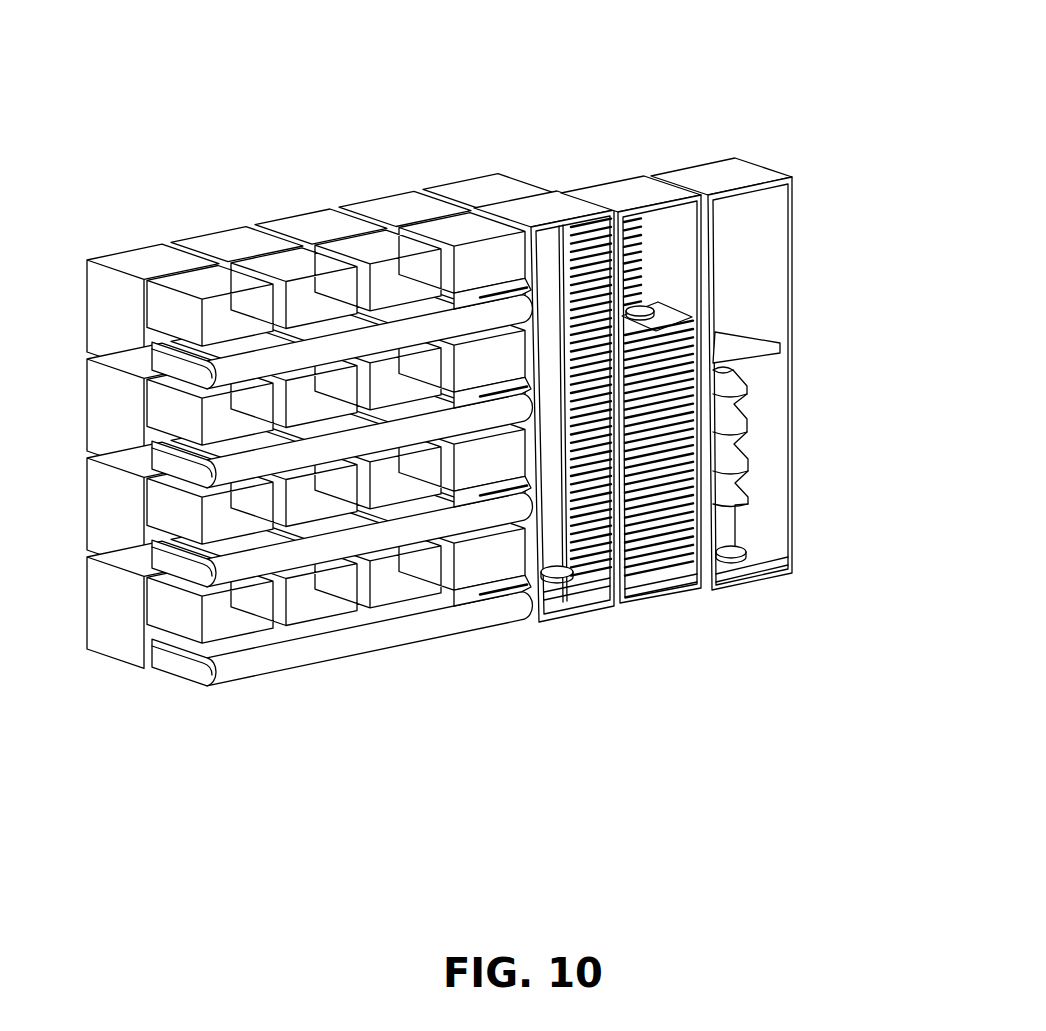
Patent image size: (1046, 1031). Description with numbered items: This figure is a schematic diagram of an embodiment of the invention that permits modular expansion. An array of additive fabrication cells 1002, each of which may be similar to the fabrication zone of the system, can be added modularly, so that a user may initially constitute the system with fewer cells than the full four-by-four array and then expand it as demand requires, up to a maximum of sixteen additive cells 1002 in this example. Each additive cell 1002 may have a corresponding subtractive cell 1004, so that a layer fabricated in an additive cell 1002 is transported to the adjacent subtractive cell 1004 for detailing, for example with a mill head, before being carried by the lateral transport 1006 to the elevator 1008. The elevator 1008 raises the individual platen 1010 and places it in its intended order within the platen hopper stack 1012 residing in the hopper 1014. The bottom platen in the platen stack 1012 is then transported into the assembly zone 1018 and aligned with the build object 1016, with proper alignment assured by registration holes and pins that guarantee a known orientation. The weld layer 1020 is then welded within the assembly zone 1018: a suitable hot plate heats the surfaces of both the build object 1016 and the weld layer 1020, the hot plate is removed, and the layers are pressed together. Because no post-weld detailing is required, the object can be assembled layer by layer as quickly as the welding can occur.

The additive fabrication cell 1002 is at (136, 254).
The subtractive cell 1004 is at (221, 276).
The lateral transport 1006 is at (348, 333).
The elevator 1008 is at (540, 419).
The platen 1010 is at (574, 592).
The platen hopper stack 1012 is at (660, 594).
The hopper 1014 is at (605, 401).
The build object 1016 is at (747, 412).
The assembly zone 1018 is at (747, 484).
The weld layer 1020 is at (733, 552).